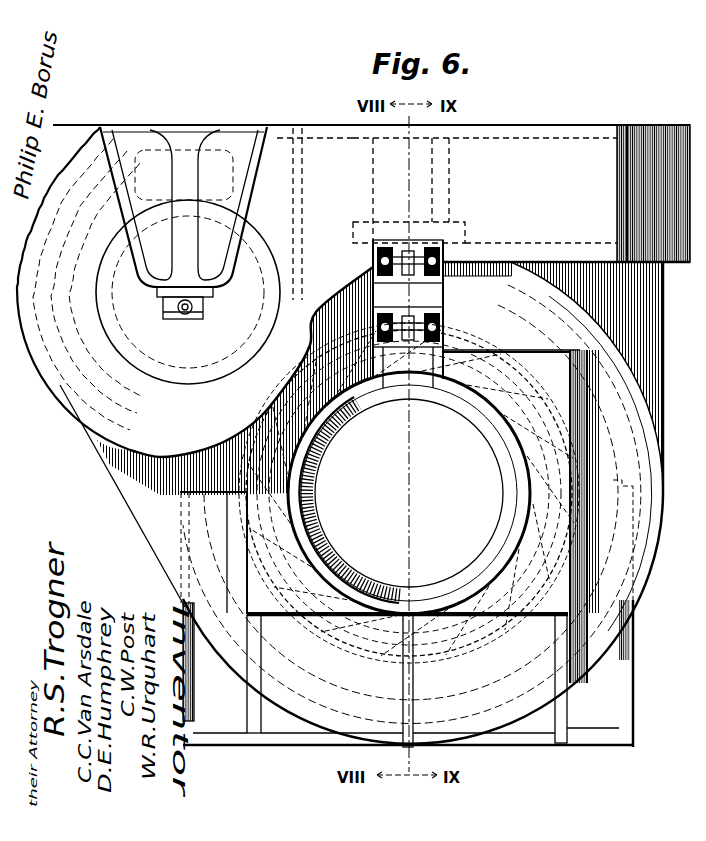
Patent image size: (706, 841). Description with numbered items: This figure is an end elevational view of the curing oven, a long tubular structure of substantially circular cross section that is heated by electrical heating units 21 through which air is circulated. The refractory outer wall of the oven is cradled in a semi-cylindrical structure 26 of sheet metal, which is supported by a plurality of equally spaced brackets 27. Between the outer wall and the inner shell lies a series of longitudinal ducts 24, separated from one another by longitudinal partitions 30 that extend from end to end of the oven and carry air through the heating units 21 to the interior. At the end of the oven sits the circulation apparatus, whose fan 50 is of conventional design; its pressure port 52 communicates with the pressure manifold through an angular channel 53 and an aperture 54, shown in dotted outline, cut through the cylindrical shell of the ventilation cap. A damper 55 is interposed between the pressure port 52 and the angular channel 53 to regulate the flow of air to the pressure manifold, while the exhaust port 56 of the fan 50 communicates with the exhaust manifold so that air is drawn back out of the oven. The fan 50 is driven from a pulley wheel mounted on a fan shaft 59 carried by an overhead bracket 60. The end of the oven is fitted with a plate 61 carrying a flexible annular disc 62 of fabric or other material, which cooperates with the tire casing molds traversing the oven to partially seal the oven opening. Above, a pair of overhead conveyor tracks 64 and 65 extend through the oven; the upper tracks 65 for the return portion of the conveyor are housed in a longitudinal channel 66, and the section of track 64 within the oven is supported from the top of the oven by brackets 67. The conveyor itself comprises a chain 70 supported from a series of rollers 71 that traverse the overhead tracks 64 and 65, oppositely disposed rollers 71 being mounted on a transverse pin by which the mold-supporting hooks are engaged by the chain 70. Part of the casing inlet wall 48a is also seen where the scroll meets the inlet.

The electrical heating units 21 is at (322, 554).
The longitudinal ducts 24 is at (380, 653).
The semi-cylindrical structure 26 is at (494, 688).
The brackets 27 is at (635, 684).
The longitudinal partitions 30 is at (277, 593).
The casing inlet wall 48a is at (143, 480).
The fan 50 is at (65, 397).
The pressure port 52 is at (276, 141).
The angular channel 53 is at (540, 138).
The aperture 54 is at (648, 350).
The damper 55 is at (302, 178).
The exhaust port 56 is at (188, 293).
The fan shaft 59 is at (181, 314).
The overhead bracket 60 is at (143, 262).
The plate 61 is at (528, 440).
The flexible annular disc 62 is at (504, 488).
The overhead conveyor track 64 is at (437, 344).
The upper tracks 65 is at (462, 262).
The longitudinal channel 66 is at (467, 224).
The brackets 67 is at (480, 326).
The chain 70 is at (408, 293).
The rollers 71 is at (387, 250).